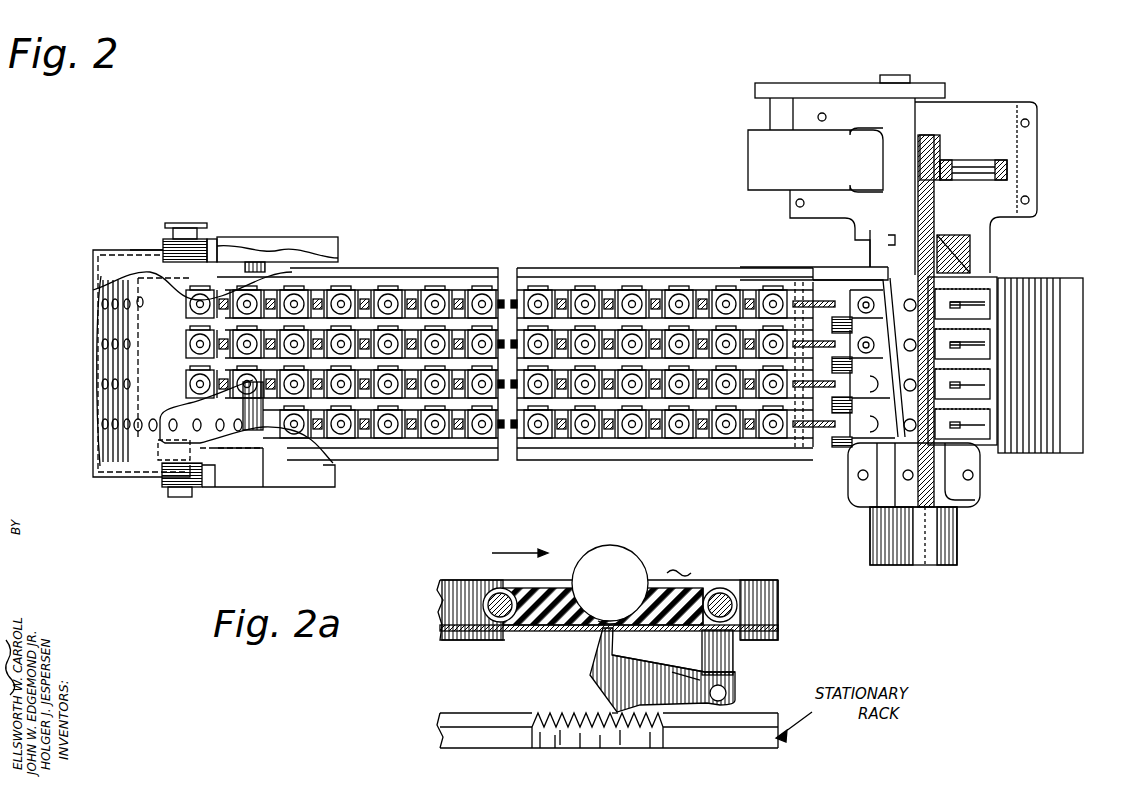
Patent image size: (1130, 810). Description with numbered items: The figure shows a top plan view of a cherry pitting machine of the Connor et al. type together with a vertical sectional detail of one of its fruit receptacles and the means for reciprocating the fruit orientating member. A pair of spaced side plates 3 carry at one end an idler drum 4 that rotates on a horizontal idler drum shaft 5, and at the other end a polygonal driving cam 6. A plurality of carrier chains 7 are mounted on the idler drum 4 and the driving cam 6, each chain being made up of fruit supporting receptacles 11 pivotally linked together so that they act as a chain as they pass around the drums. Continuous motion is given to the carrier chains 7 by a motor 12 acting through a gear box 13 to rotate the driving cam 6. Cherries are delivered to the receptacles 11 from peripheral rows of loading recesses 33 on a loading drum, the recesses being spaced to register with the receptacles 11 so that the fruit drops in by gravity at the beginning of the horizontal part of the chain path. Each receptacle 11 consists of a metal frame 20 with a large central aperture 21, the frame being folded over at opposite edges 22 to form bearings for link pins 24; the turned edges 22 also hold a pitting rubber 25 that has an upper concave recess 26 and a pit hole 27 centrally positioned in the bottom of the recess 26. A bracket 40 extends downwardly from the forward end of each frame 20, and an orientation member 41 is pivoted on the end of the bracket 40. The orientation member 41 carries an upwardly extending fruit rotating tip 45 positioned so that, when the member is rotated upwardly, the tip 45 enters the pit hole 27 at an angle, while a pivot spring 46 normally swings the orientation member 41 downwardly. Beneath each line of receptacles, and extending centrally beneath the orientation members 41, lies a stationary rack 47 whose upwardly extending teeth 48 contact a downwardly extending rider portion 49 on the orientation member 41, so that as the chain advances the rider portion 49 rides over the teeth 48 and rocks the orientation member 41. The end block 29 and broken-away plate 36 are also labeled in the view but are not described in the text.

In FIG. 2, the side plates 3 is at (556, 268).
In FIG. 2, the idler drum 4 is at (160, 362).
In FIG. 2, the idler drum shaft 5 is at (176, 490).
In FIG. 2, the polygonal driving cam 6 is at (976, 278).
In FIG. 2, the carrier chains 7 is at (473, 337).
In FIG. 2A, the fruit supporting receptacles 11 is at (681, 564).
In FIG. 2, the motor 12 is at (893, 118).
In FIG. 2, the gear box 13 is at (778, 166).
In FIG. 2A, the metal frame 20 is at (715, 598).
In FIG. 2A, the central aperture 21 is at (585, 631).
In FIG. 2A, the folded-over edges 22 is at (490, 592).
In FIG. 2A, the link pins 24 is at (508, 630).
In FIG. 2, the pitting rubber 25 is at (668, 292).
In FIG. 2A, the pitting rubber 25 is at (557, 592).
In FIG. 2, the upper concave recess 26 is at (681, 300).
In FIG. 2A, the upper concave recess 26 is at (575, 590).
In FIG. 2A, the pit hole 27 is at (605, 640).
In FIG. 2, the end block 29 is at (1033, 290).
In FIG. 2, the loading recesses 33 is at (148, 275).
In FIG. 2, the broken-away plate 36 is at (97, 407).
In FIG. 2, the bracket 40 is at (965, 344).
In FIG. 2A, the bracket 40 is at (724, 657).
In FIG. 2A, the orientation member 41 is at (640, 692).
In FIG. 2A, the fruit rotating tip 45 is at (613, 627).
In FIG. 2A, the pivot spring 46 is at (707, 655).
In FIG. 2A, the stationary rack 47 is at (645, 728).
In FIG. 2A, the teeth 48 is at (563, 728).
In FIG. 2A, the rider portion 49 is at (615, 712).